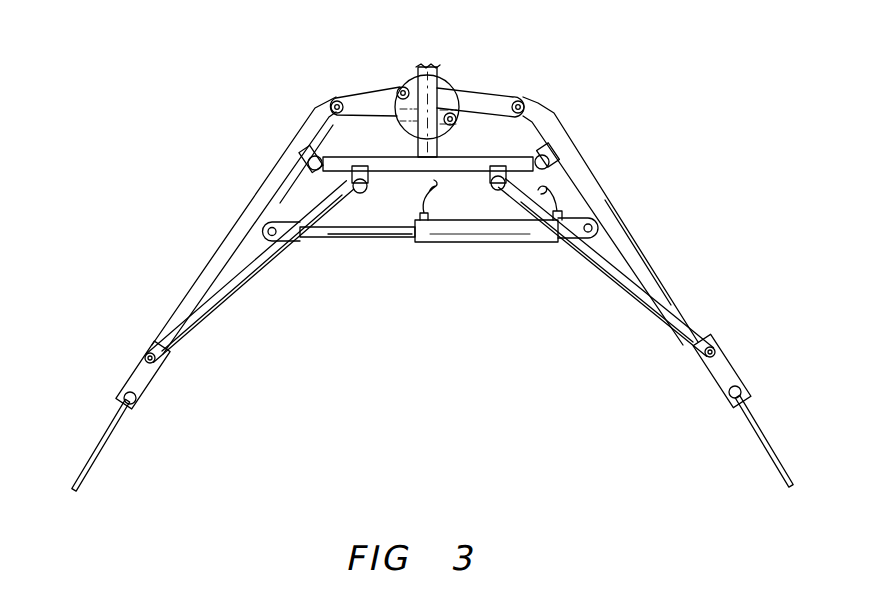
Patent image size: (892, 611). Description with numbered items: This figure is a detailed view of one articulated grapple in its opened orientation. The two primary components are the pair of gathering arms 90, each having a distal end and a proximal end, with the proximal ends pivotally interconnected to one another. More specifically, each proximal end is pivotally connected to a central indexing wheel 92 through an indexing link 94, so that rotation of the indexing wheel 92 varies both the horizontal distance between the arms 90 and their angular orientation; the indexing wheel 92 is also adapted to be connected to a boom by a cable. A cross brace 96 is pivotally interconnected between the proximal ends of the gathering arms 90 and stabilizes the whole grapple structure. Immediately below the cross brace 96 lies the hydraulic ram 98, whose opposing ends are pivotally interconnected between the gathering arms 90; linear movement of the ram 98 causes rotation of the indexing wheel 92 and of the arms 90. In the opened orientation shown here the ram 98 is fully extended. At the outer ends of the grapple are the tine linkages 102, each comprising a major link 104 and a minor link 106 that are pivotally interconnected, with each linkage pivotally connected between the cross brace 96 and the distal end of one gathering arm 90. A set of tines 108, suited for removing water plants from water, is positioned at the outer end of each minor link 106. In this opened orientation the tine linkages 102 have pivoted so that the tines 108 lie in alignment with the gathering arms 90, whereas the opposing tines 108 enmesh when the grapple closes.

The gathering arm 90 is at (248, 218).
The indexing wheel 92 is at (447, 77).
The indexing link 94 is at (361, 108).
The cross brace 96 is at (540, 147).
The hydraulic ram 98 is at (512, 225).
The tine linkage 102 is at (222, 297).
The major link 104 is at (187, 327).
The minor link 106 is at (136, 368).
The tine 108 is at (93, 463).